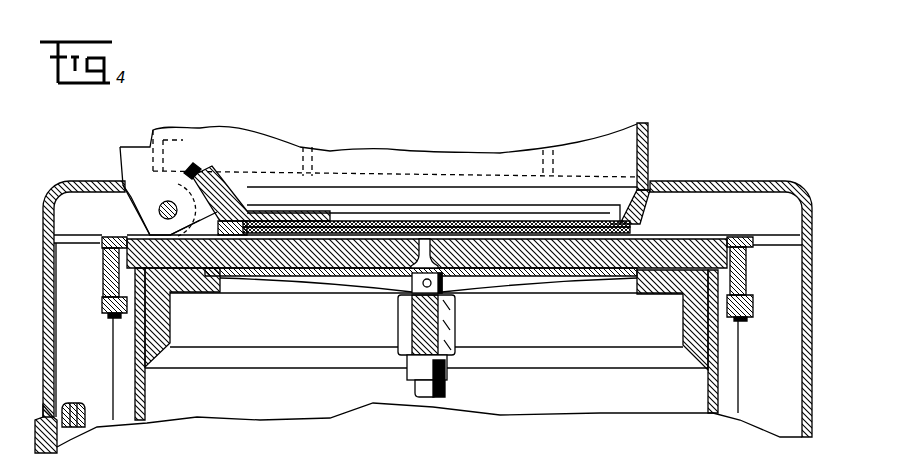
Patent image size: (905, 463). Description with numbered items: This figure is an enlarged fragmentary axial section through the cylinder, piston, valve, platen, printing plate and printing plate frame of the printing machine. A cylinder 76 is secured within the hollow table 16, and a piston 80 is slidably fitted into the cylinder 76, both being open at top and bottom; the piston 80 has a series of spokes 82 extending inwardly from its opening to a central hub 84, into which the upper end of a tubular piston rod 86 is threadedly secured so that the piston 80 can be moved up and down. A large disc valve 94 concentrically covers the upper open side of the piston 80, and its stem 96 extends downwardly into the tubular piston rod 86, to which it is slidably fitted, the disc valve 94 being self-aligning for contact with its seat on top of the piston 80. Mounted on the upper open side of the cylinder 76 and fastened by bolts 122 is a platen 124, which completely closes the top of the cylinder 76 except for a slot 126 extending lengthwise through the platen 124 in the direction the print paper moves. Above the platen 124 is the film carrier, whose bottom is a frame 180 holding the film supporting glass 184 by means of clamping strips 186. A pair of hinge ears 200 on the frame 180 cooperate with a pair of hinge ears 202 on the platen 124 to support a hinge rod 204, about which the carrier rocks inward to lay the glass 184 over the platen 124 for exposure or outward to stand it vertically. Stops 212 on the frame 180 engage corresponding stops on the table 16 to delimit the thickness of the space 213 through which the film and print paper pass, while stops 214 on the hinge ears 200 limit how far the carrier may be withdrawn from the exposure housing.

The hollow table 16 is at (734, 183).
The cylinder 76 is at (148, 399).
The piston 80 is at (170, 324).
The spokes 82 is at (435, 335).
The central hub 84 is at (398, 334).
The tubular piston rod 86 is at (440, 375).
The disc valve 94 is at (412, 280).
The valve stem 96 is at (408, 296).
The bolts 122 is at (103, 300).
The platen 124 is at (116, 257).
The slot 126 is at (424, 239).
The frame 180 is at (654, 210).
The film supporting glass 184 is at (558, 198).
The clamping strips 186 is at (637, 228).
The hinge ears 200 is at (125, 163).
The hinge ears 202 is at (142, 202).
The hinge rod 204 is at (160, 212).
The stops 212 is at (655, 199).
The space 213 is at (467, 237).
The stops 214 is at (193, 175).